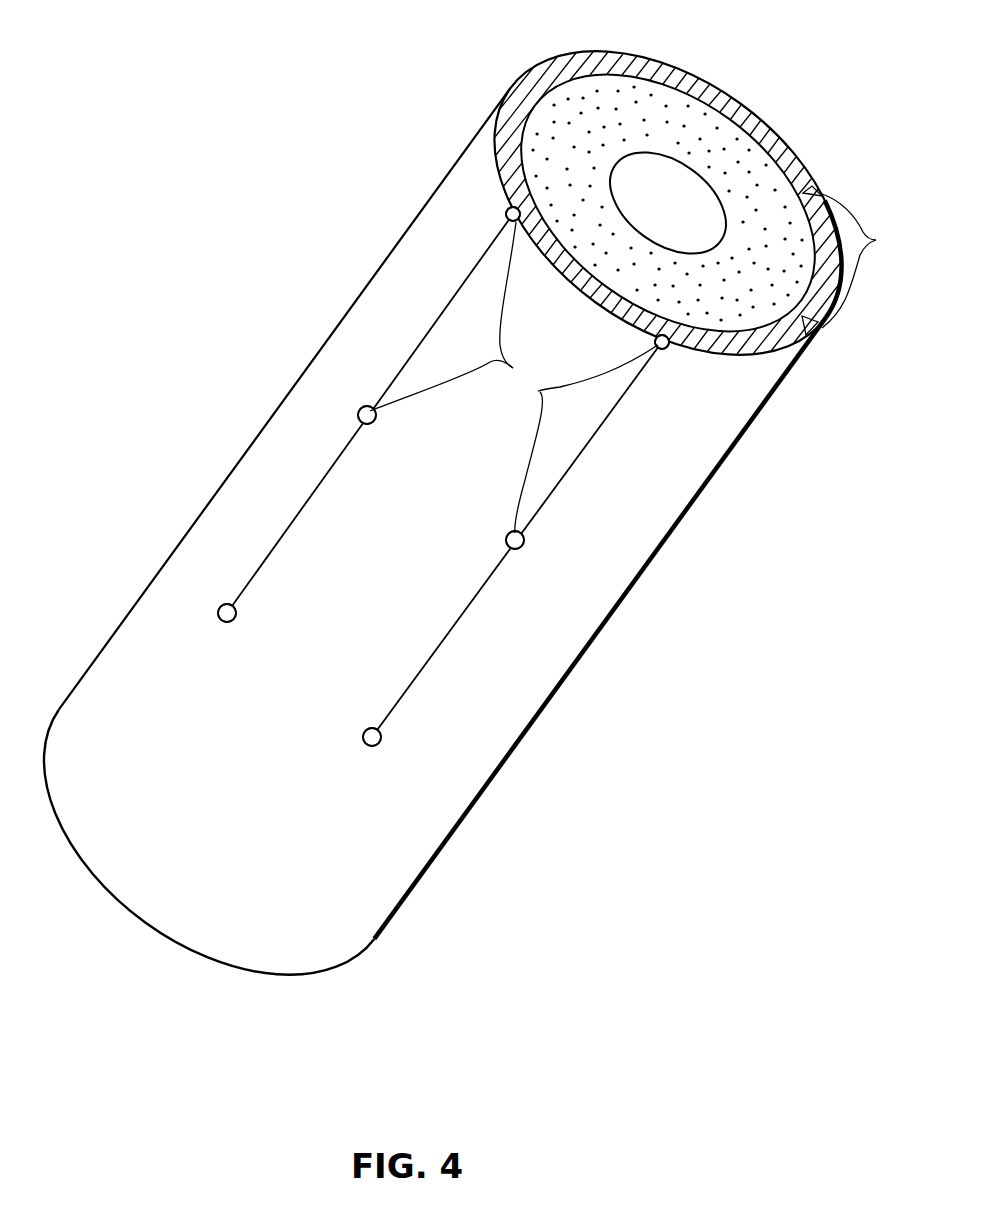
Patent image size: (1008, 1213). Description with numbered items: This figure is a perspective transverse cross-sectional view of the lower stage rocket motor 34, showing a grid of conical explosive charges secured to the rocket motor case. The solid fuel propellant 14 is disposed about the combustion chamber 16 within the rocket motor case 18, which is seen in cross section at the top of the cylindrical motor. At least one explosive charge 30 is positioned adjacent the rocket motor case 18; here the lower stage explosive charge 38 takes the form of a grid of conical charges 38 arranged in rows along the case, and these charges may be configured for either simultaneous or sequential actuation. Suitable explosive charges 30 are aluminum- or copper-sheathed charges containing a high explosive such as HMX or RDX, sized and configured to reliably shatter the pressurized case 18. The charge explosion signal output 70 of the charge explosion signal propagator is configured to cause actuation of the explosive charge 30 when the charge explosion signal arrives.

The solid fuel propellant 14 is at (742, 158).
The combustion chamber 16 is at (640, 184).
The rocket motor case 18 is at (790, 175).
The explosive charge 30 is at (537, 91).
The lower stage rocket motor 34 is at (466, 610).
The lower stage explosive charge 38 is at (881, 240).
The charge explosion signal output 70 is at (506, 213).